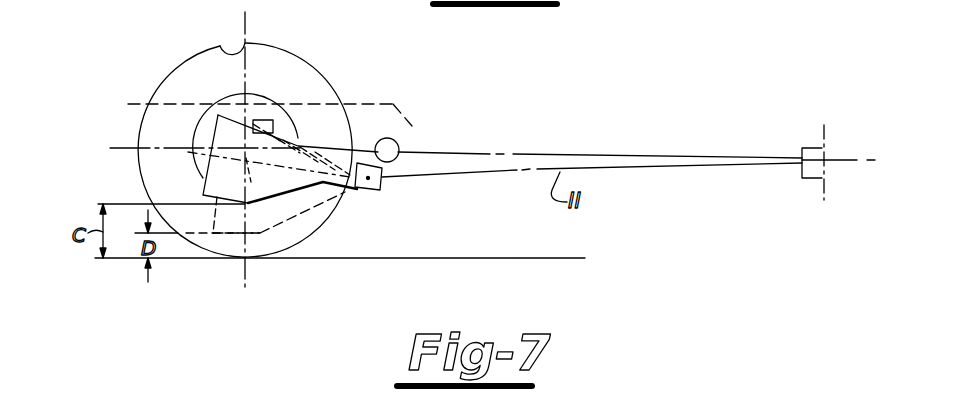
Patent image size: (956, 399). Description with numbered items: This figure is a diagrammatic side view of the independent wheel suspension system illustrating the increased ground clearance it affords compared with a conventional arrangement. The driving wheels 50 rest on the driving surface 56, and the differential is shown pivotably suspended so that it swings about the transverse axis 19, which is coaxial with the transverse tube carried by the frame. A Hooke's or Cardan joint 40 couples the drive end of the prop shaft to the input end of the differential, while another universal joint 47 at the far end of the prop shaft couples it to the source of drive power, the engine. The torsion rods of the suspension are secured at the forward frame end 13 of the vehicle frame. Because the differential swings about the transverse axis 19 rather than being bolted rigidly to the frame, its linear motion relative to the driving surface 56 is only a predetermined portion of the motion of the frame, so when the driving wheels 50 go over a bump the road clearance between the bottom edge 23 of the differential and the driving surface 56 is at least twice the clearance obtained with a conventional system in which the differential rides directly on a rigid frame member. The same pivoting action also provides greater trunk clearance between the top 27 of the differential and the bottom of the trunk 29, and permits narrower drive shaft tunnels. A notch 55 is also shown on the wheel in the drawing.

The forward frame end 13 is at (298, 242).
The transverse axis 19 is at (393, 142).
The bottom edge of the differential 23 is at (207, 198).
The top of the differential 27 is at (222, 111).
The bottom of the trunk 29 is at (143, 100).
The Hooke's or Cardan joint 40 is at (378, 190).
The universal joint 47 is at (808, 148).
The driving wheels 50 is at (265, 53).
The notch 55 is at (224, 44).
The driving surface 56 is at (395, 258).